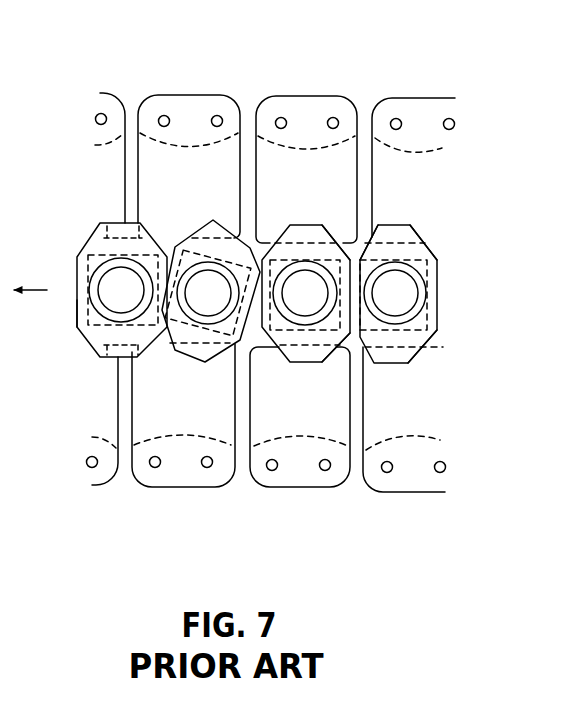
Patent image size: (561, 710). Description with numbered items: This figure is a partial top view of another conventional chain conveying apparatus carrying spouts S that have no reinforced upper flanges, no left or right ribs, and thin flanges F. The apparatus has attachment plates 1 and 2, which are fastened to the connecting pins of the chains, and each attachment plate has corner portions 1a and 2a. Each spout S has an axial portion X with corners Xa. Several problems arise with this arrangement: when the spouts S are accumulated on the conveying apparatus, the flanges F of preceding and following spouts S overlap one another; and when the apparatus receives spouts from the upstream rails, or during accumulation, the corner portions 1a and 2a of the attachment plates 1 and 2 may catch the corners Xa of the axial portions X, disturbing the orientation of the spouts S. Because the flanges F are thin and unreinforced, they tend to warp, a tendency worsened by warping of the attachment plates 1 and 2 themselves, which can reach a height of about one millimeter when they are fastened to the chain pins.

The attachment plate 1 is at (182, 415).
The corner portion 1a is at (340, 355).
The attachment plate 2 is at (187, 170).
The corner portion 2a is at (259, 235).
The axial portion X is at (438, 274).
The corner Xa is at (368, 251).
The flange F is at (107, 230).
The spout S is at (74, 334).